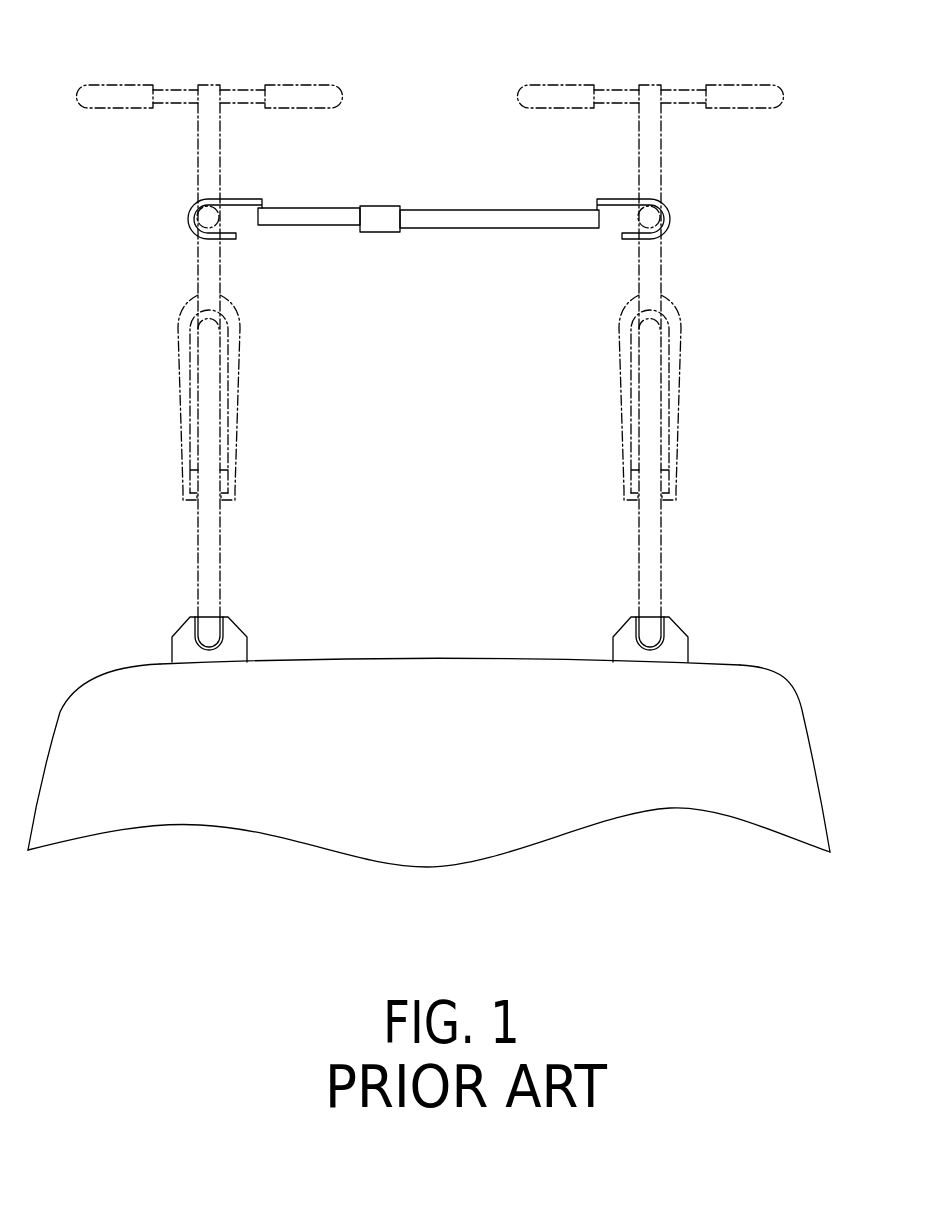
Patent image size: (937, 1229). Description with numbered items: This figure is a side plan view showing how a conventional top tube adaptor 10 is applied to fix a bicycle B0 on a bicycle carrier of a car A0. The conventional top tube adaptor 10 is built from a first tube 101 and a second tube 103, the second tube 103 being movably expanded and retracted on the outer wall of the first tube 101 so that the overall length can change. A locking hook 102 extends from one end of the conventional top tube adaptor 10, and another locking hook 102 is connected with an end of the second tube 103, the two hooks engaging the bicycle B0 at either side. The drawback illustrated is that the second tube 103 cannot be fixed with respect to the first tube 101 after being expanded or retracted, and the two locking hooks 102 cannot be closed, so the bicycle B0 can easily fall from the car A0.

The conventional top tube adaptor 10 is at (429, 157).
The first tube 101 is at (323, 216).
The locking hook 102 is at (192, 217).
The second tube 103 is at (479, 216).
The car A0 is at (585, 805).
The bicycle B0 is at (95, 95).